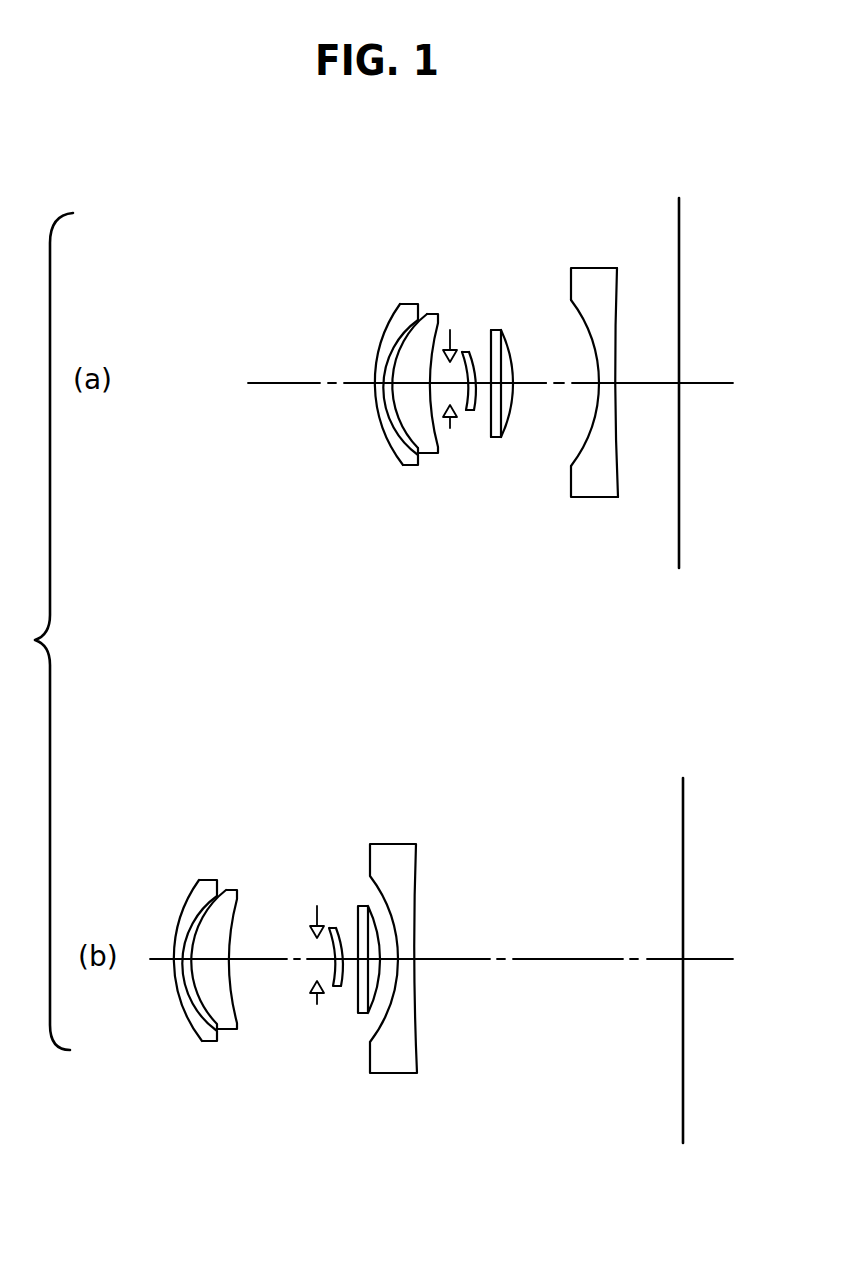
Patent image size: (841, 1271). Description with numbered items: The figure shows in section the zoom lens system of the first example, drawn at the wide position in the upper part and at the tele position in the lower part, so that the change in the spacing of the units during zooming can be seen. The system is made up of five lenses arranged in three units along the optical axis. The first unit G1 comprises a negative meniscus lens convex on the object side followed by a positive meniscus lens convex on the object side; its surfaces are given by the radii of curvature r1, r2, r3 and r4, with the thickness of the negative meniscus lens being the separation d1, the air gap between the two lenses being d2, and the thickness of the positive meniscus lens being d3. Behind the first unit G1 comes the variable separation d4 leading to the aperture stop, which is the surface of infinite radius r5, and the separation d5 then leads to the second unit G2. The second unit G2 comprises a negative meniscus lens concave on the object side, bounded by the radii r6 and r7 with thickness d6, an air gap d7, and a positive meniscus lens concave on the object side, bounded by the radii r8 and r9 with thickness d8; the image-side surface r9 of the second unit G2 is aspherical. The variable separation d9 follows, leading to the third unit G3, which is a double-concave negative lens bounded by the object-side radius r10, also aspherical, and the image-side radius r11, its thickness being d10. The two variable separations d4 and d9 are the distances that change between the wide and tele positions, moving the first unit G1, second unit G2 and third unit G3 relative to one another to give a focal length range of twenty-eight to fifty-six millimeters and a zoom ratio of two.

The first unit G1 is at (438, 233).
The second unit G2 is at (507, 233).
The third unit G3 is at (623, 233).
The radius of curvature of the first lens surface r1 is at (397, 316).
The radius of curvature of the second lens surface r2 is at (401, 303).
The radius of curvature of the third lens surface r3 is at (428, 314).
The radius of curvature of the fourth lens surface r4 is at (442, 338).
The radius of curvature of the fifth surface (stop) r5 is at (461, 351).
The radius of curvature of the sixth lens surface r6 is at (471, 351).
The radius of curvature of the seventh lens surface r7 is at (491, 336).
The radius of curvature of the eighth lens surface r8 is at (500, 330).
The radius of curvature of the ninth lens surface r9 is at (513, 345).
The radius of curvature of the tenth lens surface r10 is at (580, 318).
The radius of curvature of the eleventh lens surface r11 is at (619, 303).
The separation between the first and second lens surfaces d1 is at (380, 388).
The separation between the second and third lens surfaces d2 is at (386, 412).
The separation between the third and fourth lens surfaces d3 is at (383, 390).
The separation between the fourth and fifth surfaces d4 is at (436, 390).
The separation between the fifth and sixth surfaces d5 is at (458, 390).
The separation between the sixth and seventh lens surfaces d6 is at (466, 411).
The separation between the seventh and eighth lens surfaces d7 is at (474, 398).
The separation between the eighth and ninth lens surfaces d8 is at (505, 419).
The separation between the ninth and tenth lens surfaces d9 is at (535, 399).
The separation between the tenth and eleventh lens surfaces d10 is at (602, 386).